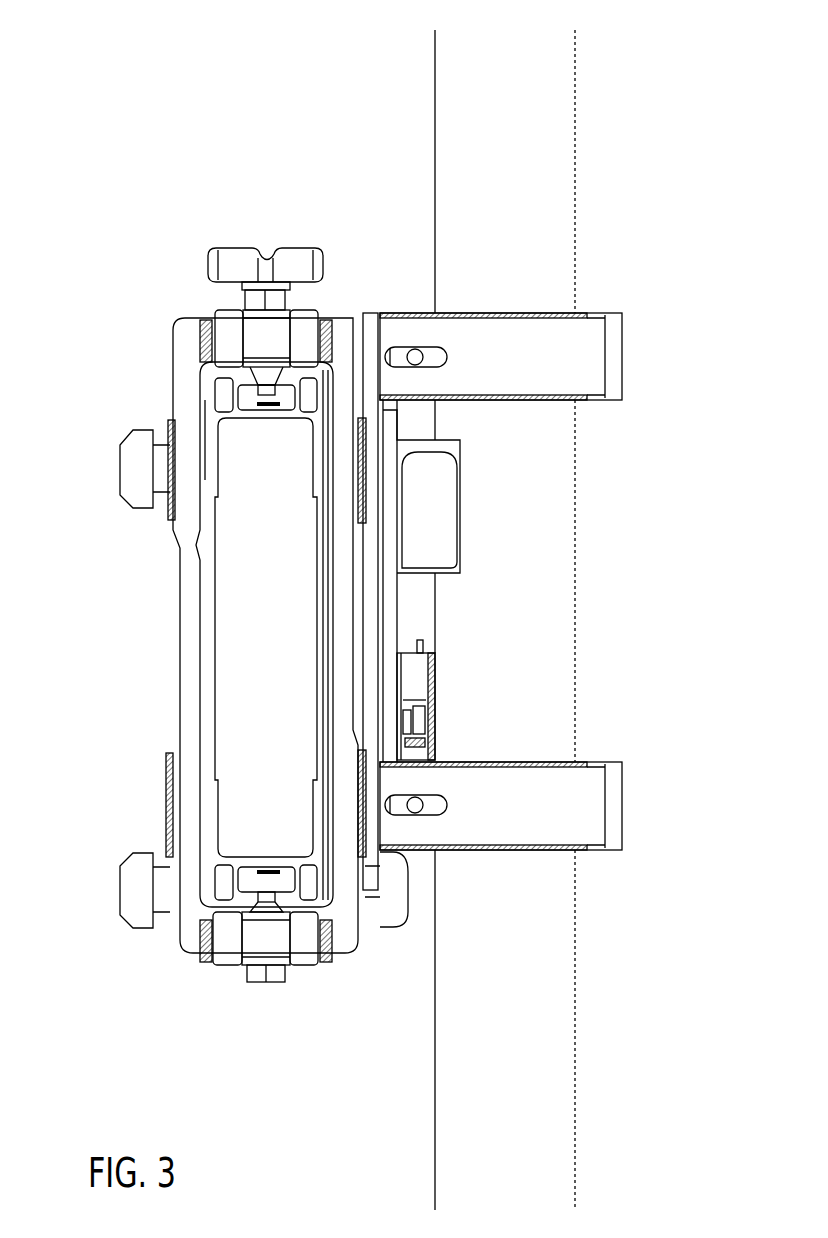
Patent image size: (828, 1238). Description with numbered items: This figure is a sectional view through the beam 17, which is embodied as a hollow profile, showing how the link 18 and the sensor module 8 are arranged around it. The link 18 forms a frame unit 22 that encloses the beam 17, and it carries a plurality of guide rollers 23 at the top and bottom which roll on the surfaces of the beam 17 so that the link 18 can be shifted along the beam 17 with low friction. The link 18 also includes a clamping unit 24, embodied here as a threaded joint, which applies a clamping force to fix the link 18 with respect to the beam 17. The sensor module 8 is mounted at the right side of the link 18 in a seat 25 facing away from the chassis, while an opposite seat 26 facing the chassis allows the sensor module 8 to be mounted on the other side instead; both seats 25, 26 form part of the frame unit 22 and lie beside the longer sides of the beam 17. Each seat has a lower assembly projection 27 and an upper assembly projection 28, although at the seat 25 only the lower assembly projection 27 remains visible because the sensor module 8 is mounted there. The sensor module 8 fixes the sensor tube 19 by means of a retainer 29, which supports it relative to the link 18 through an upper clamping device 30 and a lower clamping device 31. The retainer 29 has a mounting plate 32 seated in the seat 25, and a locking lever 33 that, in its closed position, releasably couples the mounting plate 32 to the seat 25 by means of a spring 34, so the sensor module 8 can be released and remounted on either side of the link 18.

The sensor module 8 is at (601, 262).
The beam 17 is at (212, 665).
The link 18 is at (154, 331).
The sensor tube 19 is at (578, 133).
The frame unit 22 is at (173, 398).
The guide rollers 23 is at (225, 310).
The clamping unit 24 is at (283, 250).
The seat 25 is at (343, 467).
The seat 26 is at (183, 535).
The lower assembly projection 27 is at (120, 890).
The upper assembly projection 28 is at (120, 480).
The retainer 29 is at (413, 598).
The upper clamping device 30 is at (624, 354).
The lower clamping device 31 is at (624, 803).
The mounting plate 32 is at (368, 635).
The locking lever 33 is at (462, 490).
The spring 34 is at (440, 740).